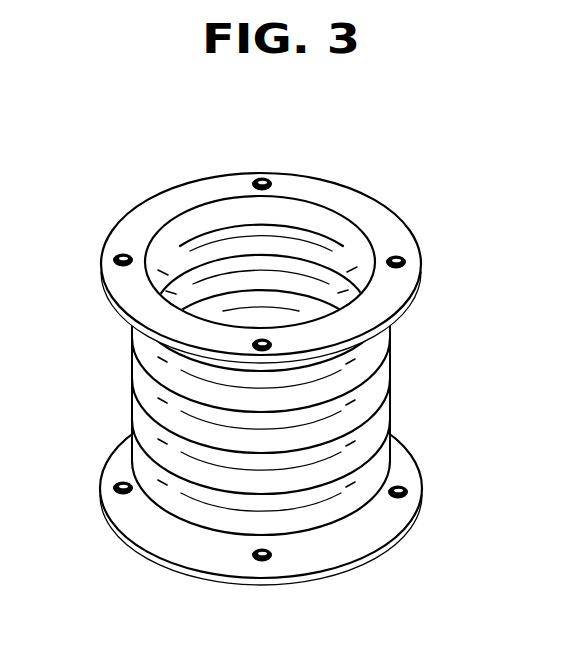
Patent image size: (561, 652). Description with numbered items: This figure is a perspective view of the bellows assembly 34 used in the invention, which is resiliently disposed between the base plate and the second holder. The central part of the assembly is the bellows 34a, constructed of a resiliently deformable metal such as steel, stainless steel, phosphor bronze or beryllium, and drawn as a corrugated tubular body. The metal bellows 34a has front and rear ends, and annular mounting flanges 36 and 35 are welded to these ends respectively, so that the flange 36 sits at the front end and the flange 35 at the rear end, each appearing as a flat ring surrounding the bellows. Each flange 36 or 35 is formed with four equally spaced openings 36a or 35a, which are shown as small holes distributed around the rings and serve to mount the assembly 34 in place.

The bellows assembly 34 is at (270, 360).
The bellows 34a is at (131, 371).
The annular mounting flange 35 is at (376, 208).
The openings 35a is at (262, 178).
The annular mounting flange 36 is at (372, 533).
The openings 36a is at (113, 489).